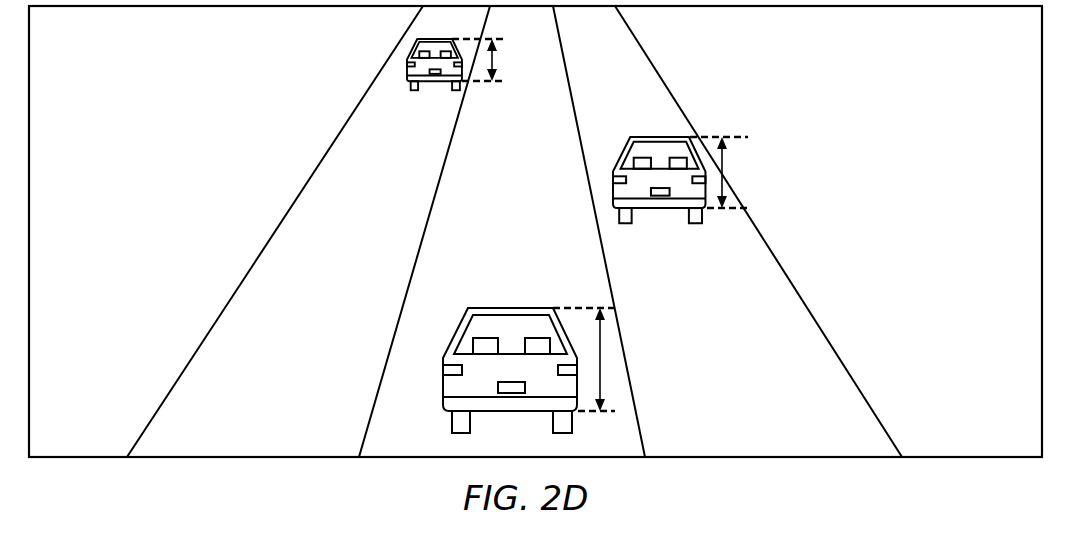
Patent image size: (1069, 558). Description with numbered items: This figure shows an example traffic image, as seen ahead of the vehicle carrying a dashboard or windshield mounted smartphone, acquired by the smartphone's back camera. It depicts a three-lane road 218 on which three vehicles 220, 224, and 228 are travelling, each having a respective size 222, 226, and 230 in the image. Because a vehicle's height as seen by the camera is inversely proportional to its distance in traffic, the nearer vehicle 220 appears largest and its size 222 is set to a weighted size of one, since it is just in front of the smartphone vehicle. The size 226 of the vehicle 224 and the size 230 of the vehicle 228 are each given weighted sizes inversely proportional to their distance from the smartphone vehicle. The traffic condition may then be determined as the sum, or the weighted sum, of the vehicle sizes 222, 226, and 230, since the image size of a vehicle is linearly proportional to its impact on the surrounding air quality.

The three-lane road 218 is at (192, 356).
The vehicle 220 is at (500, 308).
The size 222 is at (602, 355).
The vehicle 224 is at (680, 136).
The size 226 is at (724, 163).
The vehicle 228 is at (433, 83).
The size 230 is at (495, 54).